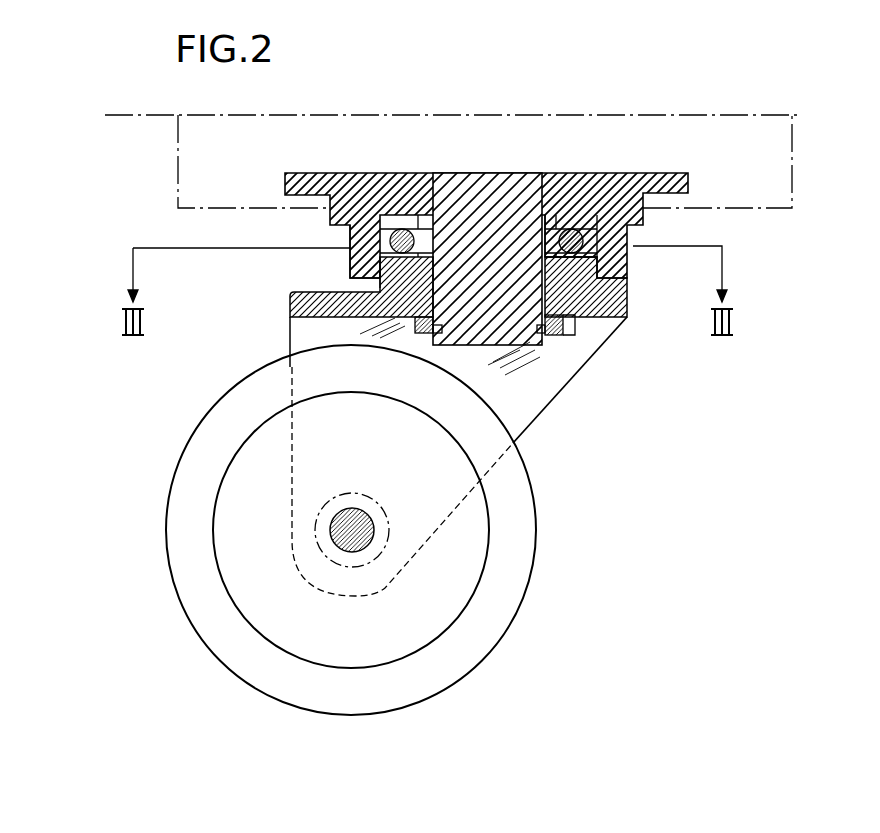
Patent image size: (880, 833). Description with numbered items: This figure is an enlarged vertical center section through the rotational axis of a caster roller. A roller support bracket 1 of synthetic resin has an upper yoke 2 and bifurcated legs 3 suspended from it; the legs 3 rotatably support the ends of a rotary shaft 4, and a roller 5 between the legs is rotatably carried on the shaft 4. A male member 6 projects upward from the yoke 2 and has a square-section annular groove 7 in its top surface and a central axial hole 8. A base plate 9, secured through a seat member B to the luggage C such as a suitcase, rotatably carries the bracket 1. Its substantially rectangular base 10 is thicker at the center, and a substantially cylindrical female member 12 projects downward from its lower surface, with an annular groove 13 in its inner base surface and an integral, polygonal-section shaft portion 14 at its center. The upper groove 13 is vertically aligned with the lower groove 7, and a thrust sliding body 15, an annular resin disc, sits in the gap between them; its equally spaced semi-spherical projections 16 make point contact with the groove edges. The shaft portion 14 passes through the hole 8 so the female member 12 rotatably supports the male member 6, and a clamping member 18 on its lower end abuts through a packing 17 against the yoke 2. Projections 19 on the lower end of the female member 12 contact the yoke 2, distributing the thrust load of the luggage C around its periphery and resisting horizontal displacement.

The roller support bracket 1 is at (538, 442).
The upper yoke 2 is at (298, 308).
The bifurcated legs 3 is at (316, 336).
The rotary shaft 4 is at (350, 528).
The roller 5 is at (480, 640).
The male member 6 is at (612, 306).
The annular groove 7 is at (574, 248).
The axial hole 8 is at (561, 321).
The base plate 9 is at (222, 182).
The base 10 is at (432, 178).
The female member 12 is at (356, 245).
The annular groove 13 is at (414, 222).
The shaft portion 14 is at (483, 288).
The thrust sliding body 15 is at (547, 238).
The projections 16 is at (580, 214).
The packing 17 is at (576, 322).
The clamping member 18 is at (552, 335).
The projections 19 is at (375, 288).
The seat member B is at (748, 172).
The luggage C is at (652, 112).